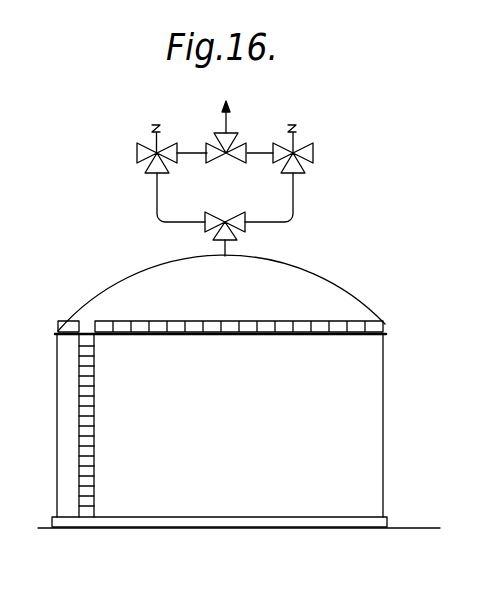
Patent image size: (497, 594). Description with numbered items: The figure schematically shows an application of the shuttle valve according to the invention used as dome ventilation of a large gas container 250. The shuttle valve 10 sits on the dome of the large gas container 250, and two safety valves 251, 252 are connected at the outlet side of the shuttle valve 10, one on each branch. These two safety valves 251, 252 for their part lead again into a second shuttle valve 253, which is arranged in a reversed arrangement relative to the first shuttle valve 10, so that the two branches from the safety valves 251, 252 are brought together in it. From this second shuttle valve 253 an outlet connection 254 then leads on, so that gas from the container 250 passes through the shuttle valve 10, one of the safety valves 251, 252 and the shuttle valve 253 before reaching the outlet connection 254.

The shuttle valve 10 is at (205, 227).
The large gas container 250 is at (372, 423).
The safety valve 251 is at (148, 163).
The safety valve 252 is at (298, 158).
The shuttle valve 253 is at (213, 134).
The outlet connection 254 is at (229, 121).